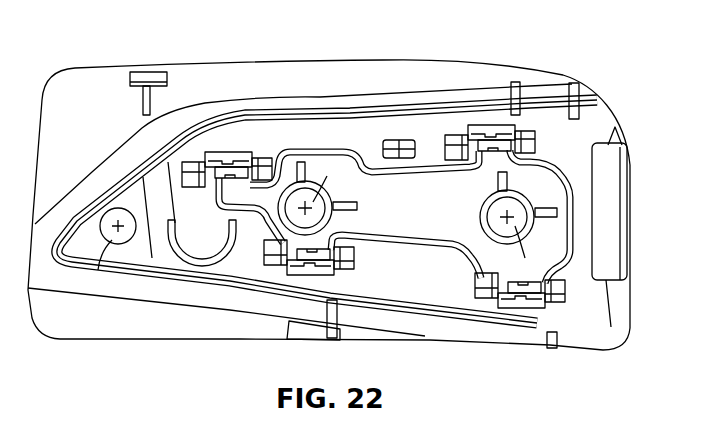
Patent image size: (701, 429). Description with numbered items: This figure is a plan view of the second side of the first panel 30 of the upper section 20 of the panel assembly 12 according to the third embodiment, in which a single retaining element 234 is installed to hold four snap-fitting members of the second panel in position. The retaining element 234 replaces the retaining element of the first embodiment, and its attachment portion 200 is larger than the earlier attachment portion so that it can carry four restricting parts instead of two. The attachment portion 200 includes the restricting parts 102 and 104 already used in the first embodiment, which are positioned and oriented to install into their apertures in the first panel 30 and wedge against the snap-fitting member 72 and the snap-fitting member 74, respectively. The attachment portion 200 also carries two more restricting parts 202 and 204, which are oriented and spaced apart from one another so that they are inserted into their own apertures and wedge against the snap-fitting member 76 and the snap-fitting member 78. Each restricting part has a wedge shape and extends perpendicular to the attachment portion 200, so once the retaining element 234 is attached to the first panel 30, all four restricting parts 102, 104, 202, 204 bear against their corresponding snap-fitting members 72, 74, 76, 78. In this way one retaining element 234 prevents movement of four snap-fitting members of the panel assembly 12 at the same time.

The panel assembly 12 is at (259, 41).
The upper section 20 is at (433, 74).
The first panel 30 is at (365, 143).
The snap-fitting member 74 is at (228, 157).
The restricting part 104 is at (256, 170).
The snap-fitting member 78 is at (488, 131).
The restricting part 204 is at (512, 143).
The snap-fitting member 72 is at (305, 278).
The restricting part 102 is at (340, 267).
The snap-fitting member 76 is at (520, 300).
The restricting part 202 is at (557, 297).
The attachment portion 200 is at (432, 210).
The retaining element 234 is at (410, 246).